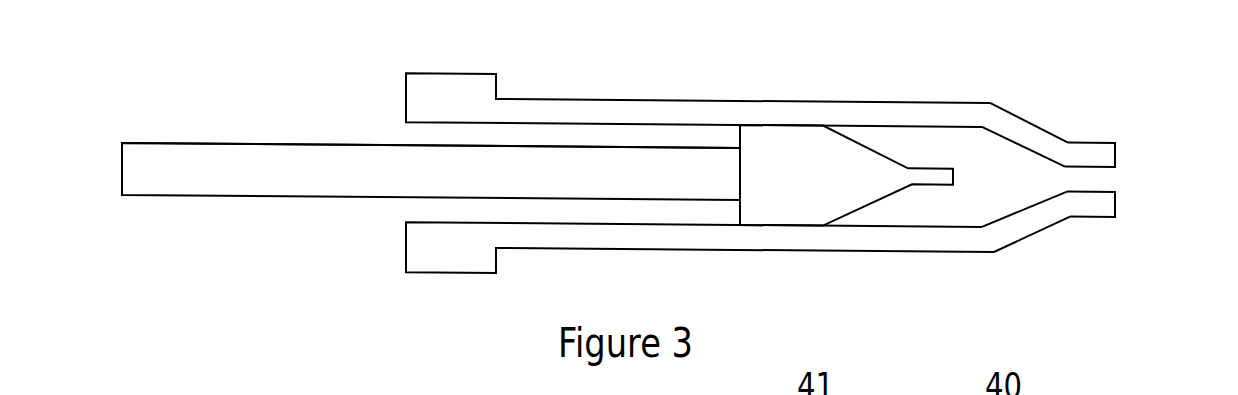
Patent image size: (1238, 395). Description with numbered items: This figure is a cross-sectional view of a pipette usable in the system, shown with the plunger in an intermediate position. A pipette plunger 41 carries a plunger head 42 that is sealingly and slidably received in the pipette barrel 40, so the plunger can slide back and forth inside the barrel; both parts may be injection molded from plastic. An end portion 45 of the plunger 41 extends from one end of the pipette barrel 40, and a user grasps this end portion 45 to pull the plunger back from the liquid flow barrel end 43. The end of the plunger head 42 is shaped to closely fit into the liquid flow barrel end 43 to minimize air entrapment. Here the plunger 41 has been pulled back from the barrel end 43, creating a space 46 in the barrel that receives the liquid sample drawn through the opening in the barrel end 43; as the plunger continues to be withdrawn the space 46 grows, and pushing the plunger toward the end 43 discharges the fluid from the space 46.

The pipette barrel 40 is at (872, 102).
The pipette plunger 41 is at (388, 192).
The plunger head 42 is at (880, 178).
The liquid flow barrel end 43 is at (1081, 168).
The end portion 45 is at (180, 143).
The space 46 is at (1001, 168).